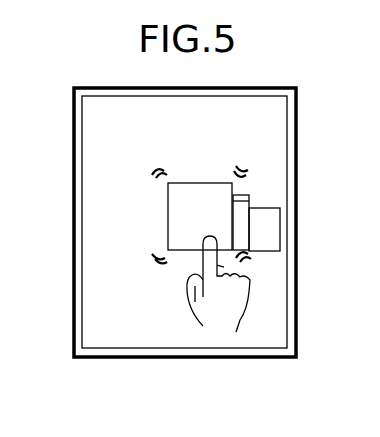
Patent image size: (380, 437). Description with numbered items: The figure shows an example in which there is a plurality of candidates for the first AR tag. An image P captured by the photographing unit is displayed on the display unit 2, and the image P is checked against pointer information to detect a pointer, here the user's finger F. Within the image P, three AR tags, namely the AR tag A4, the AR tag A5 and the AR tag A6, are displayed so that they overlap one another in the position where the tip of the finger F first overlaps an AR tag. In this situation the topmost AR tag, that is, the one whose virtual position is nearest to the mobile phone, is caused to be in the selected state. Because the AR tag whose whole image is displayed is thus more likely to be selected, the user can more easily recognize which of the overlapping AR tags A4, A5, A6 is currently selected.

The display unit 2 is at (244, 87).
The image P is at (297, 129).
The AR tag A4 is at (167, 214).
The AR tag A5 is at (249, 206).
The AR tag A6 is at (280, 228).
The finger F is at (203, 258).